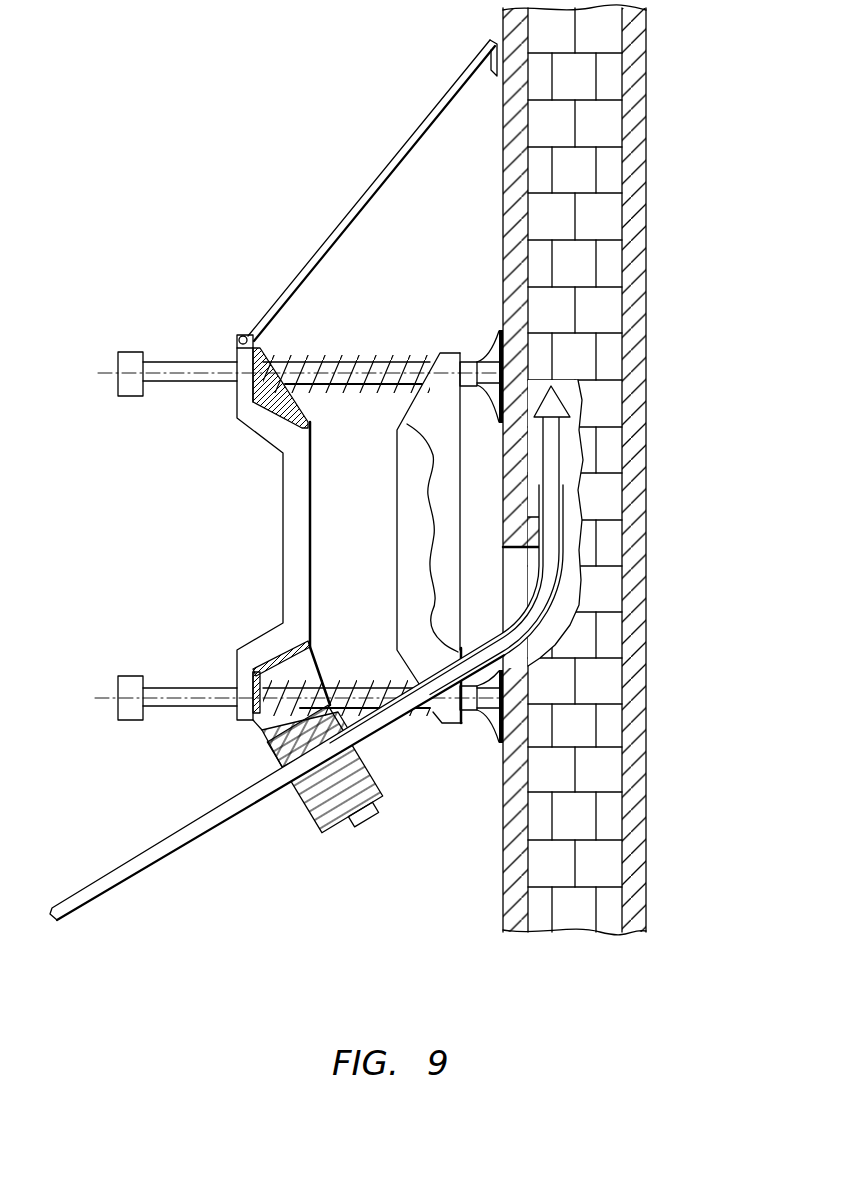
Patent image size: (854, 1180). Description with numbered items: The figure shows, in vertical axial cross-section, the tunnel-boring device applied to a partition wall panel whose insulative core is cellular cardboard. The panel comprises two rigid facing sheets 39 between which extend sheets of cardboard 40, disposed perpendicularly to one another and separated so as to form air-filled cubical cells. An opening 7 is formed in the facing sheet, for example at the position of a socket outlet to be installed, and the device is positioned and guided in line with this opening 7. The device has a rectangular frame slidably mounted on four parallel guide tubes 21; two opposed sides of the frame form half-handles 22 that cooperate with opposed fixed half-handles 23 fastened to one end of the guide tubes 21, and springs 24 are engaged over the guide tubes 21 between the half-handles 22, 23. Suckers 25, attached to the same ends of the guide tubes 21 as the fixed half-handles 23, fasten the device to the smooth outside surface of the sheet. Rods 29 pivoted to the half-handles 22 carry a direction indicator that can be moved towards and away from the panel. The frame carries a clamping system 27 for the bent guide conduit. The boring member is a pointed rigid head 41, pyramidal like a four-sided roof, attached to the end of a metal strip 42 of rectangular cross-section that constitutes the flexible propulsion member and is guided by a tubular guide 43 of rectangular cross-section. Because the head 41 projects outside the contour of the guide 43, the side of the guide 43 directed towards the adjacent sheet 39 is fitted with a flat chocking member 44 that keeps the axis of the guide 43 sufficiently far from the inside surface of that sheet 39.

The rigid facing sheets 39 is at (512, 37).
The sheets of cardboard 40 is at (545, 123).
The opening 7 is at (508, 587).
The suckers 25 is at (490, 362).
The guide tubes 21 is at (205, 368).
The springs 24 is at (320, 358).
The half-handles 22 is at (297, 508).
The half-handles 23 is at (410, 514).
The rods 29 is at (394, 165).
The flat chocking member 44 is at (445, 532).
The clamping system 27 is at (282, 757).
The metal strip 42 is at (552, 493).
The tubular guide 43 is at (566, 448).
The pointed rigid head 41 is at (568, 410).